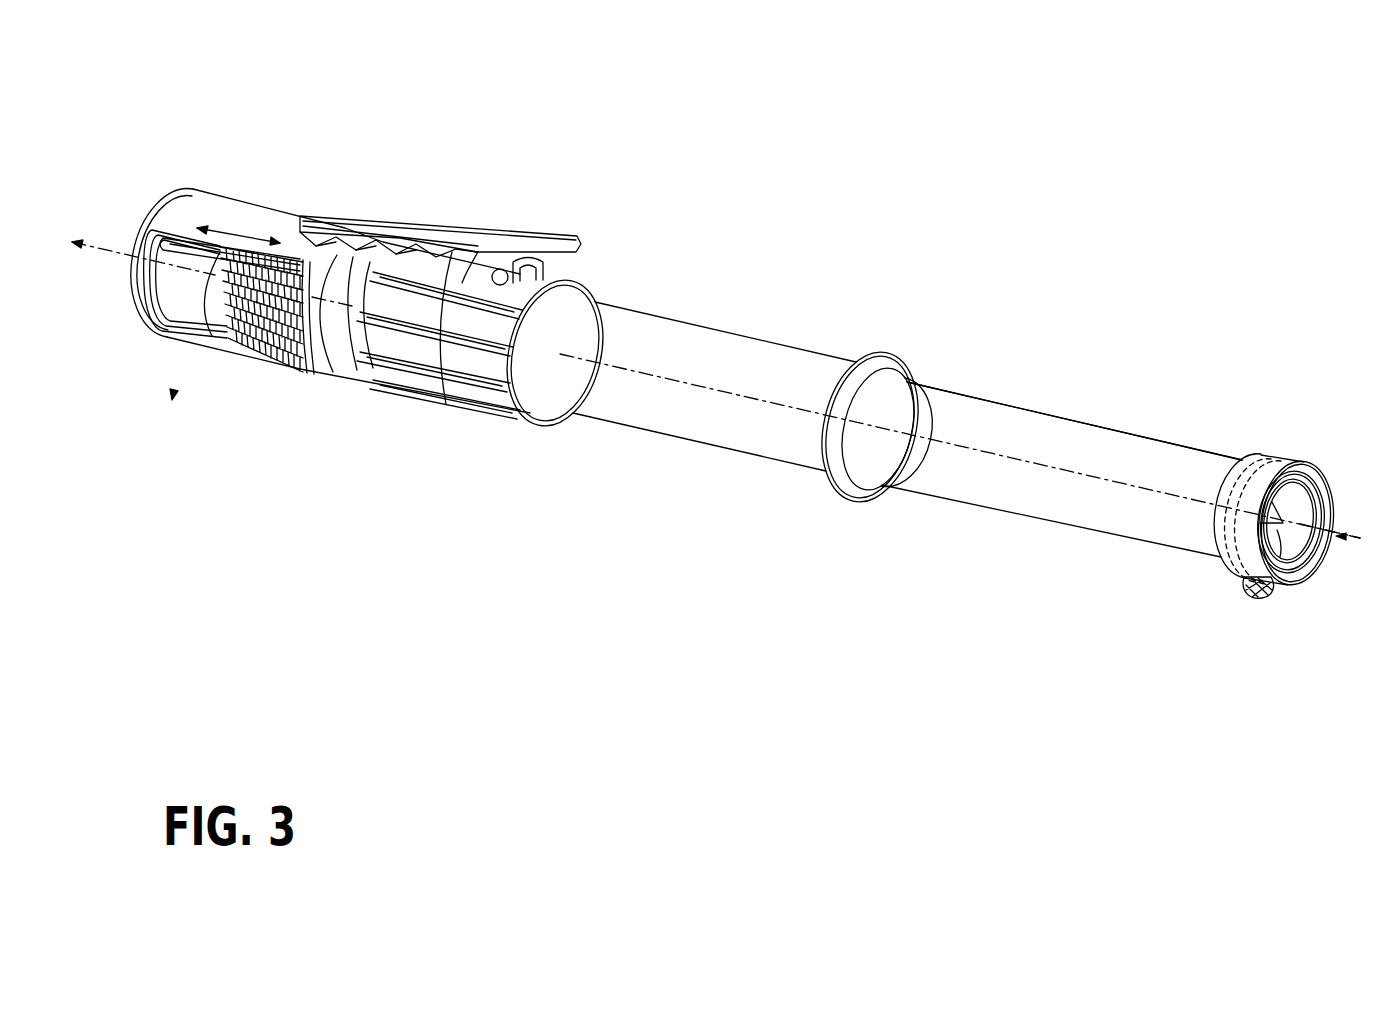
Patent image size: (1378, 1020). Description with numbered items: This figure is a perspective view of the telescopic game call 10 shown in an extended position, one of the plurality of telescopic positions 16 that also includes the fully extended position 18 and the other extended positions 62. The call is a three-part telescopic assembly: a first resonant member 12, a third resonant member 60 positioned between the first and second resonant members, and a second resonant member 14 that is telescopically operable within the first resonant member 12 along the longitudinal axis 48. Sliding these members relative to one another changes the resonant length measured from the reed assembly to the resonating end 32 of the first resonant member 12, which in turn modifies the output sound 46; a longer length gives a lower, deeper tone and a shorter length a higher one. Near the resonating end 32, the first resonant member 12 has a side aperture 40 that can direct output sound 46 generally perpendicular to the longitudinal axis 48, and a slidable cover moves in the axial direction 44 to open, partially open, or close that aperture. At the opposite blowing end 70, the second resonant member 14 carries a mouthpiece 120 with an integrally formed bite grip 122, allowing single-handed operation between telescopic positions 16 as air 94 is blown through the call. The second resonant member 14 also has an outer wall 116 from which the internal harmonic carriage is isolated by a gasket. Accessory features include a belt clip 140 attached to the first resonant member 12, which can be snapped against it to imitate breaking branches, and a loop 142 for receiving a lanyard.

The telescopic game call 10 is at (738, 261).
The first resonant member 12 is at (265, 205).
The second resonant member 14 is at (1137, 548).
The telescopic positions 16 is at (858, 330).
The fully extended position 18 is at (606, 258).
The resonating end 32 is at (153, 217).
The side aperture 40 is at (160, 286).
The axial direction 44 is at (237, 237).
The output sound 46 is at (113, 246).
The longitudinal axis 48 is at (362, 248).
The third resonant member 60 is at (699, 450).
The extended positions 62 is at (907, 518).
The blowing end 70 is at (1312, 497).
The air 94 is at (1340, 536).
The outer wall 116 is at (1089, 449).
The mouthpiece 120 is at (1275, 582).
The bite grip 122 is at (1253, 460).
The belt clip 140 is at (492, 223).
The loop 142 is at (1250, 584).